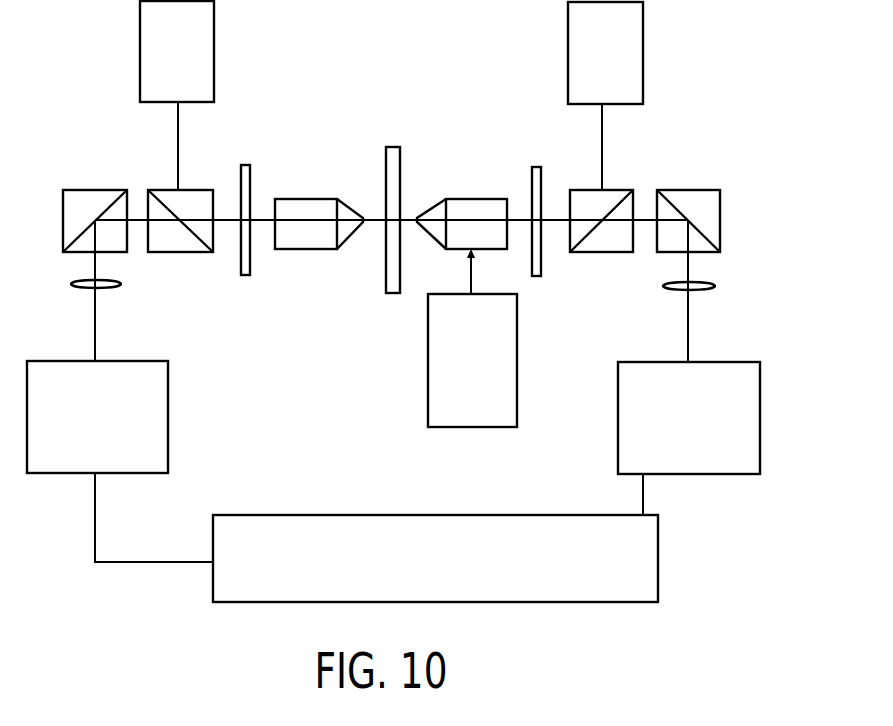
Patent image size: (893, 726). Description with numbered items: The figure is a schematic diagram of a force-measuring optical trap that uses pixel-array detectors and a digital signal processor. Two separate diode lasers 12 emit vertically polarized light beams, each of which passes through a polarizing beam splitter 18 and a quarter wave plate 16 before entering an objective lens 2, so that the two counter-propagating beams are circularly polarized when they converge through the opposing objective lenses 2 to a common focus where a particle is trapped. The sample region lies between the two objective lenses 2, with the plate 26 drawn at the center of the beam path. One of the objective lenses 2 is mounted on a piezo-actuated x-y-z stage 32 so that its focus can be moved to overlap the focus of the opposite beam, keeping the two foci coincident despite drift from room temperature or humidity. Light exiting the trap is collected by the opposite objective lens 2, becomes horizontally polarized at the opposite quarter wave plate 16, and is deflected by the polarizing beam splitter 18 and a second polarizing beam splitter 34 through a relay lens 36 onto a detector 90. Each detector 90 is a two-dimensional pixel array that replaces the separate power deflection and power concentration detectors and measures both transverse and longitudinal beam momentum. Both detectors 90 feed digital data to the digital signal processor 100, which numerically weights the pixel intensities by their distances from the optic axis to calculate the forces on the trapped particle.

The objective lens 2 is at (320, 199).
The diode laser 12 is at (140, 40).
The quarter wave plate 16 is at (258, 144).
The polarizing beam splitter 18 is at (160, 190).
The sample plate 26 is at (395, 147).
The piezo-actuated x-y-z stage 32 is at (458, 329).
The second polarizing beam splitter 34 is at (93, 190).
The relay lens 36 is at (121, 284).
The detector 90 is at (80, 429).
The signal processor 100 is at (411, 554).